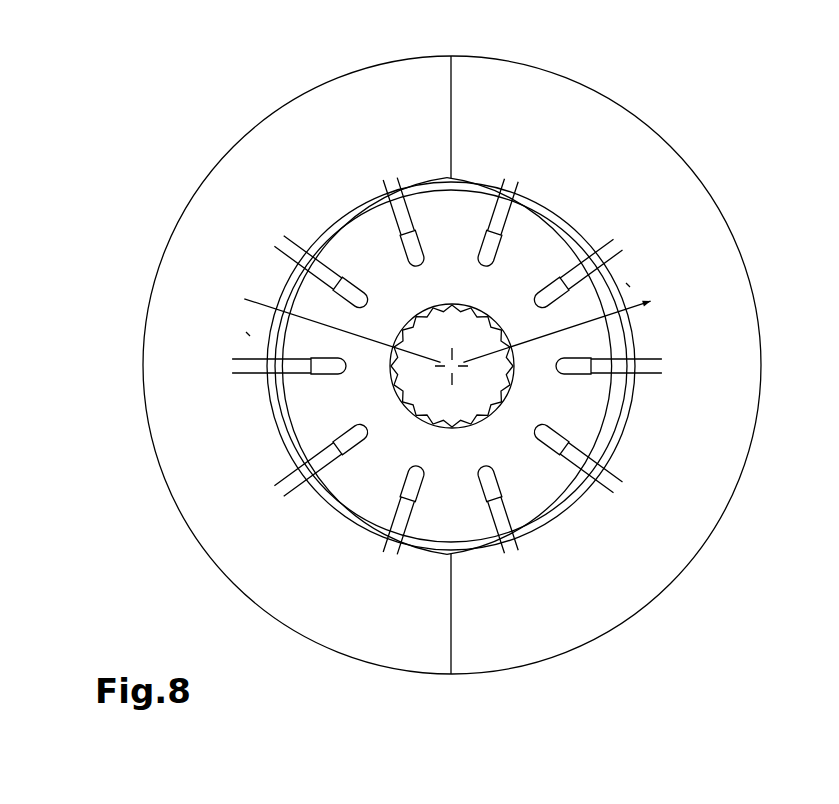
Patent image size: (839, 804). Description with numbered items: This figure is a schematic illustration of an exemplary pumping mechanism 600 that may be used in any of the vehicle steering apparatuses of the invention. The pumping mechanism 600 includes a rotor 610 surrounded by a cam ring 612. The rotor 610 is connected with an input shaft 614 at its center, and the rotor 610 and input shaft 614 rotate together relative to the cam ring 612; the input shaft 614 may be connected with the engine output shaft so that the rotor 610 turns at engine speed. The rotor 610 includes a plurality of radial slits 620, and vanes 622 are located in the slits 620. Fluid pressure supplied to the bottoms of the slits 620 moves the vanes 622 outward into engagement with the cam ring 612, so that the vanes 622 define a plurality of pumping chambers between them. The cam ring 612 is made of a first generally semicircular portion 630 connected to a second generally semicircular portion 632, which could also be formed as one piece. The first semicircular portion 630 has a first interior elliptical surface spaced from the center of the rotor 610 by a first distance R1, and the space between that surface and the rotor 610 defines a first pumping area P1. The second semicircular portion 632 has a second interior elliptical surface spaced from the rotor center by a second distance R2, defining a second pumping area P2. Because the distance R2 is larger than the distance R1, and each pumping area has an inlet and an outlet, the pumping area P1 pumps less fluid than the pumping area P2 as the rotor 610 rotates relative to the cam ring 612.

The pumping mechanism 600 is at (91, 150).
The rotor 610 is at (532, 480).
The cam ring 612 is at (553, 105).
The input shaft 614 is at (427, 382).
The radial slits 620 is at (540, 297).
The vanes 622 is at (647, 367).
The first generally semicircular portion 630 is at (588, 128).
The second generally semicircular portion 632 is at (297, 138).
The first pumping area P1 is at (628, 285).
The second pumping area P2 is at (248, 334).
The first distance R1 is at (533, 341).
The second distance R2 is at (373, 343).